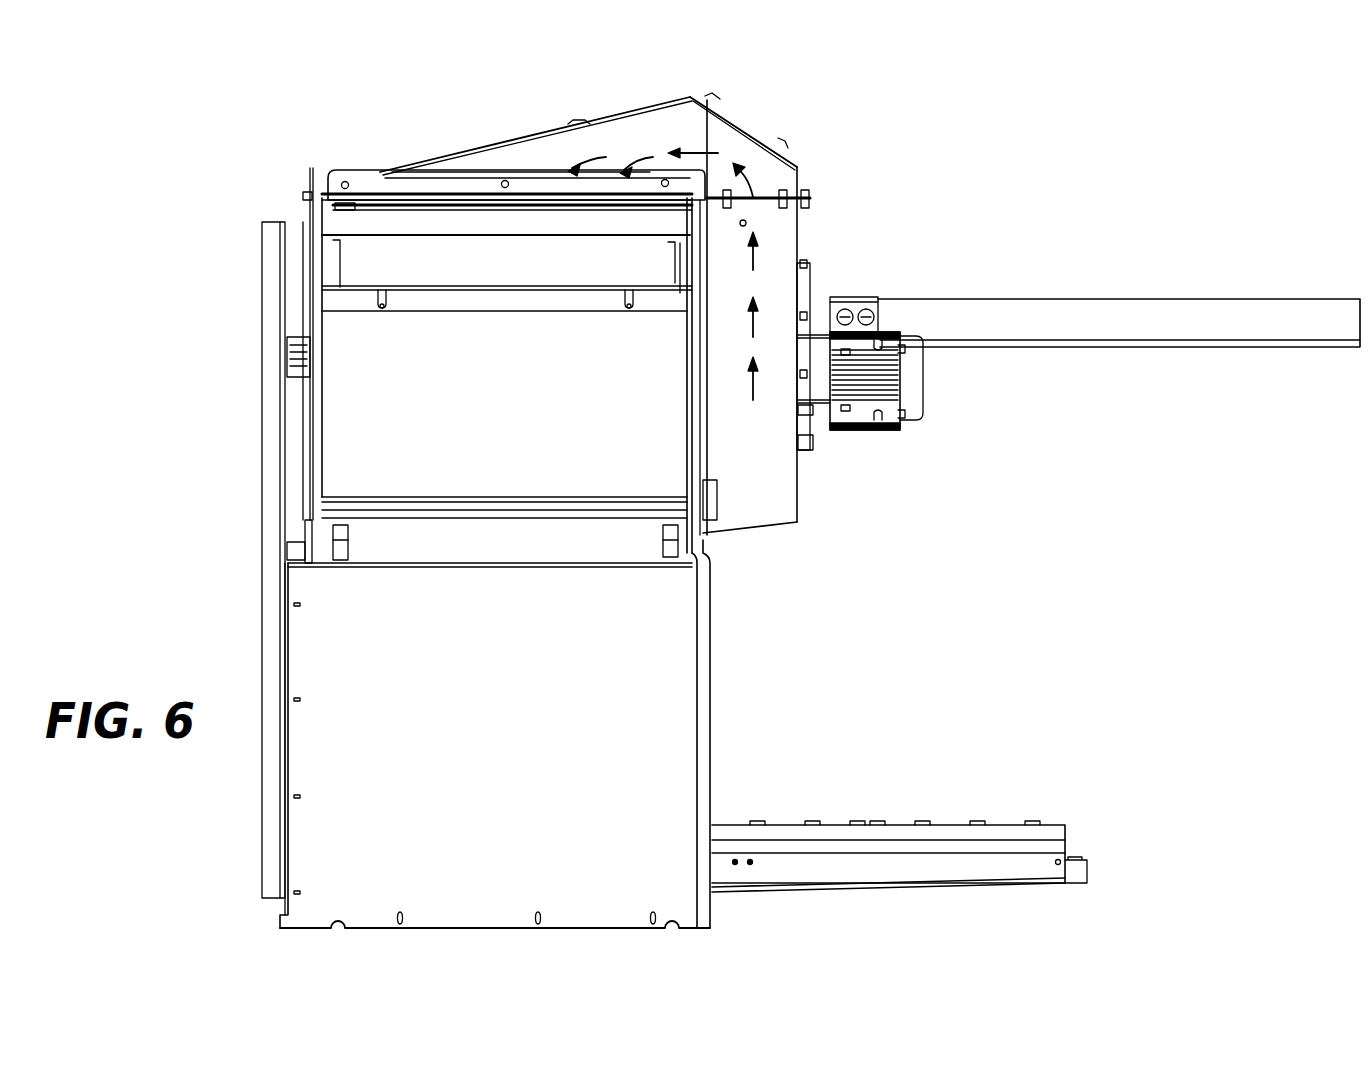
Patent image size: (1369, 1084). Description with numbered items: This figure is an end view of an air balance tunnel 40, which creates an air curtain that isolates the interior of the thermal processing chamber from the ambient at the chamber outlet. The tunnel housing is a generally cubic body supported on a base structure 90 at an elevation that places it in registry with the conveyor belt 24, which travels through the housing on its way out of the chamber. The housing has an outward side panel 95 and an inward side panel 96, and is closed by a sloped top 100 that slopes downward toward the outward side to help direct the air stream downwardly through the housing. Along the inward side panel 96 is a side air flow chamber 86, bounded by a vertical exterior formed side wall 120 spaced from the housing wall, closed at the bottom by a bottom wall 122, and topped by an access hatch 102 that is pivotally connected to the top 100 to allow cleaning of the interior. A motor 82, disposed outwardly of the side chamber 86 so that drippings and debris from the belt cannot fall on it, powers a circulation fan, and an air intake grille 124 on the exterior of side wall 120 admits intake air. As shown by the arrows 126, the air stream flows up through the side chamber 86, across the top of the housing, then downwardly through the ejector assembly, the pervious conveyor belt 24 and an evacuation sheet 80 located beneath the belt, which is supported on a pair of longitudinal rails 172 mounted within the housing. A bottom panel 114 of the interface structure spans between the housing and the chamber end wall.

The air balance tunnel 40 is at (428, 128).
The sloped top 100 is at (545, 135).
The access hatch 102 is at (757, 123).
The arrows 126 is at (753, 260).
The longitudinal rails 172 is at (627, 305).
The conveyor belt 24 is at (1193, 302).
The motor 82 is at (928, 400).
The side wall 120 is at (798, 437).
The air intake grille 124 is at (803, 450).
The side chamber 86 is at (763, 487).
The bottom wall 122 is at (765, 527).
The inward side panel 96 is at (712, 393).
The base structure 90 is at (708, 730).
The evacuation sheet 80 is at (437, 300).
The outward side panel 95 is at (310, 461).
The bottom panel 114 is at (427, 533).